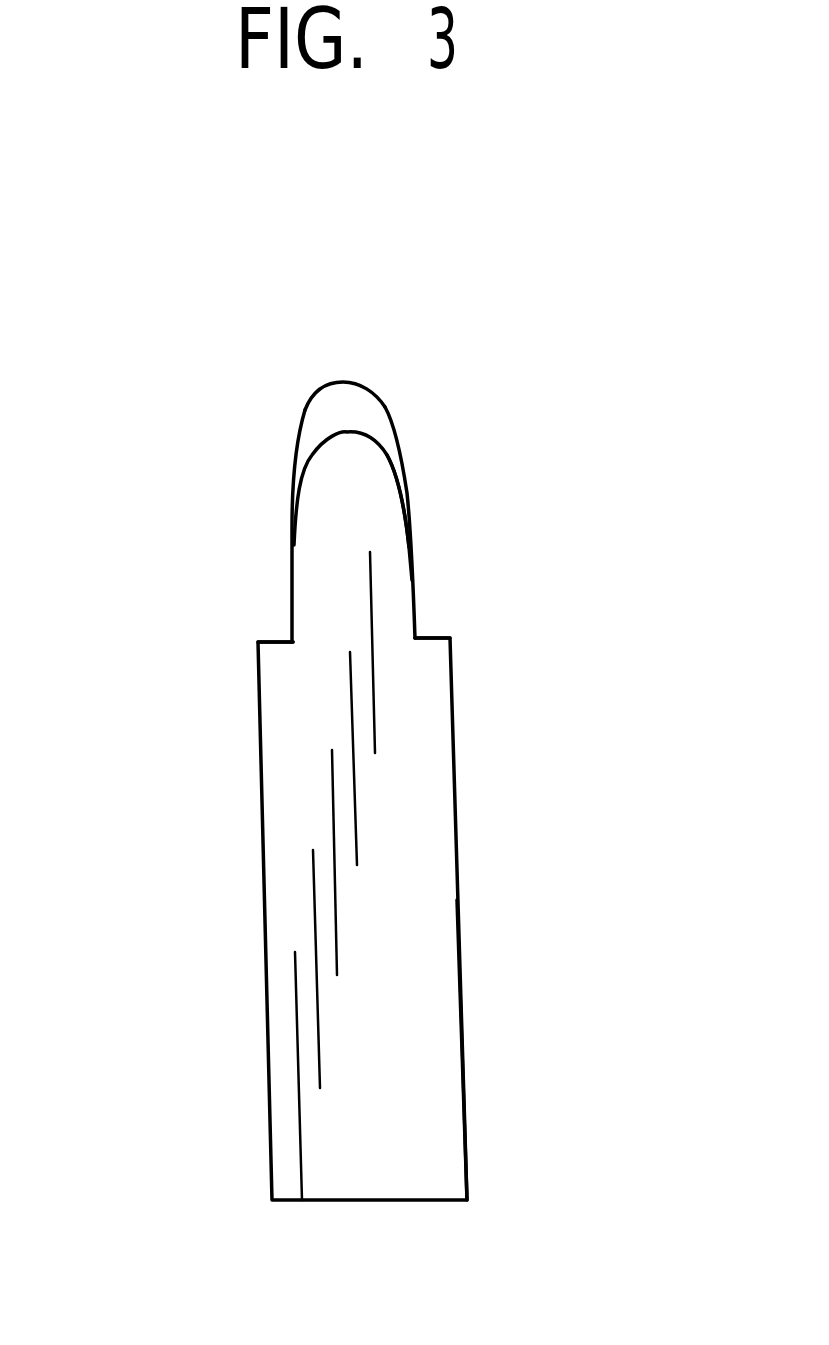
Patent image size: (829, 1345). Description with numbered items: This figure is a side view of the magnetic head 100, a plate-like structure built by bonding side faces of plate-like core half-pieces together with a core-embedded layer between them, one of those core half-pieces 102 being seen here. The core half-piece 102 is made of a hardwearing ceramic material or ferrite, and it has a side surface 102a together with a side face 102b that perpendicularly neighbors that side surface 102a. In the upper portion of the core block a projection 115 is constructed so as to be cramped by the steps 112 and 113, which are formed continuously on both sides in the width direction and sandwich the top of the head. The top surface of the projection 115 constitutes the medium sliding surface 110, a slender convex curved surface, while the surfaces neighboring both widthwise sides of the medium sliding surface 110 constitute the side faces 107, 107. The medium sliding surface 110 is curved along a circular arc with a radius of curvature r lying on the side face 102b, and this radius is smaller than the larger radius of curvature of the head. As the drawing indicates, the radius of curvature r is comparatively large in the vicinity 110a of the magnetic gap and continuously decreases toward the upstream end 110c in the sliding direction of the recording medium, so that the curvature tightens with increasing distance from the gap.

The magnetic head 100 is at (488, 364).
The core half-piece 102 is at (458, 882).
The side surface of core half-piece 102a is at (463, 1113).
The side face of core half-piece 102b is at (395, 988).
The side face 107 is at (290, 568).
The medium sliding surface 110 is at (317, 397).
The vicinity of the magnetic gap 110a is at (358, 383).
The upstream end 110c is at (363, 432).
The step 112 is at (432, 636).
The step 113 is at (273, 640).
The projection 115 is at (380, 512).